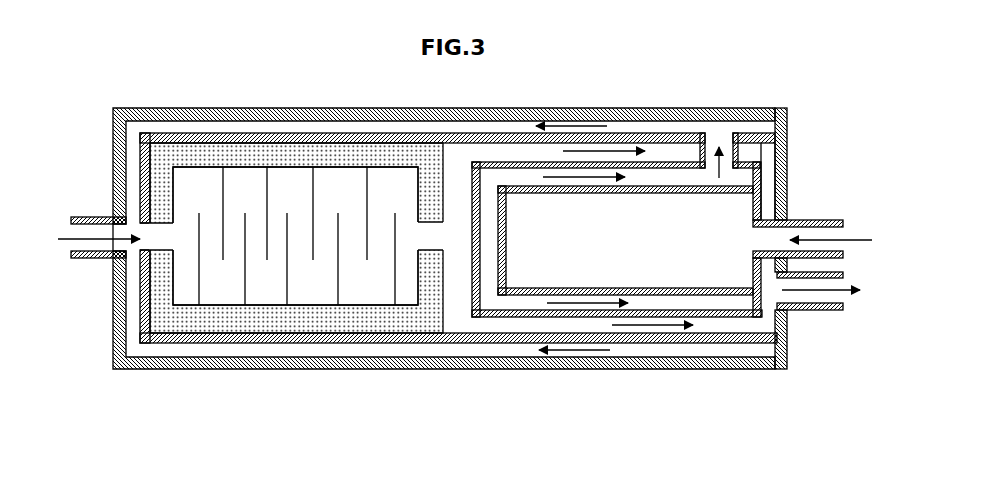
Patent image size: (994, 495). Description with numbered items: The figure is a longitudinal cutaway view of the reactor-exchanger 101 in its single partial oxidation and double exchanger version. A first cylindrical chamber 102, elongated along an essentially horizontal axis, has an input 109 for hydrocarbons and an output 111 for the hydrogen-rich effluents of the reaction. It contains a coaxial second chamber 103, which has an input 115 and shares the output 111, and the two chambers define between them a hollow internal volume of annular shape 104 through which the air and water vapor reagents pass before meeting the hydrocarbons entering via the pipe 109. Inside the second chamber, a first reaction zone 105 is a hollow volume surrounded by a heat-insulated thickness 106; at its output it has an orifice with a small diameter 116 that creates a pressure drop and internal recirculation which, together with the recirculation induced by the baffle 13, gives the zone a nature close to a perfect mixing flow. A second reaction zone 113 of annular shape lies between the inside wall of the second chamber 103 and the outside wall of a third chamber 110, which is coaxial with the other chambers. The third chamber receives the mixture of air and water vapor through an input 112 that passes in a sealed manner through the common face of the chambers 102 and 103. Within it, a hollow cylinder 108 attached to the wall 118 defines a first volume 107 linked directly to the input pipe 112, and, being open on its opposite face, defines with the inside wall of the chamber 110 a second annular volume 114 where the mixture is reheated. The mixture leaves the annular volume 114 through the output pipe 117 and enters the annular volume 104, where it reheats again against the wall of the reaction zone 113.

The reactor-exchanger 101 is at (808, 119).
The first cylindrical chamber 102 is at (127, 108).
The second chamber 103 is at (247, 142).
The hollow internal volume of annular shape 104 is at (202, 127).
The first reaction zone 105 is at (188, 203).
The heat-insulated thickness 106 is at (332, 152).
The first volume 107 is at (605, 254).
The hollow cylinder 108 is at (670, 186).
The input of hydrocarbons 109 is at (77, 217).
The third chamber 110 is at (608, 314).
The output of effluents 111 is at (813, 300).
The input of the mixture of air and water vapor reagents 112 is at (823, 223).
The second reaction zone 113 is at (518, 150).
The second annular volume 114 is at (728, 302).
The input of the second chamber 115 is at (165, 238).
The orifice with a small diameter 116 is at (432, 233).
The output pipe 117 is at (718, 141).
The wall of the third chamber 118 is at (762, 195).
The baffle 13 is at (376, 182).